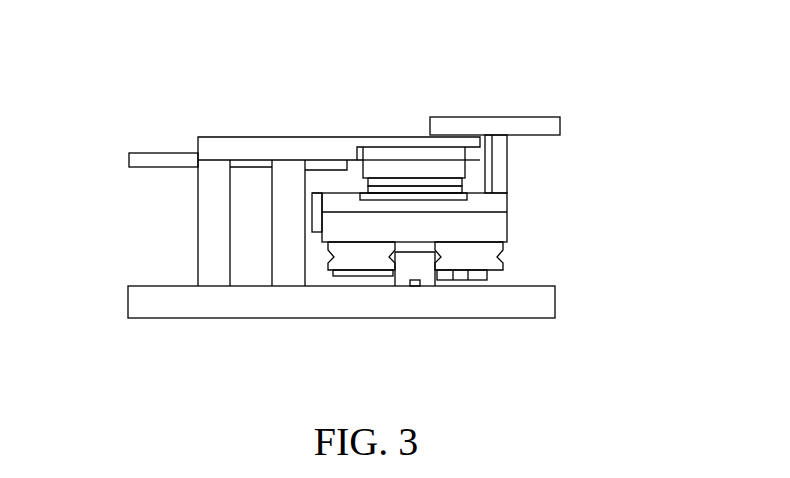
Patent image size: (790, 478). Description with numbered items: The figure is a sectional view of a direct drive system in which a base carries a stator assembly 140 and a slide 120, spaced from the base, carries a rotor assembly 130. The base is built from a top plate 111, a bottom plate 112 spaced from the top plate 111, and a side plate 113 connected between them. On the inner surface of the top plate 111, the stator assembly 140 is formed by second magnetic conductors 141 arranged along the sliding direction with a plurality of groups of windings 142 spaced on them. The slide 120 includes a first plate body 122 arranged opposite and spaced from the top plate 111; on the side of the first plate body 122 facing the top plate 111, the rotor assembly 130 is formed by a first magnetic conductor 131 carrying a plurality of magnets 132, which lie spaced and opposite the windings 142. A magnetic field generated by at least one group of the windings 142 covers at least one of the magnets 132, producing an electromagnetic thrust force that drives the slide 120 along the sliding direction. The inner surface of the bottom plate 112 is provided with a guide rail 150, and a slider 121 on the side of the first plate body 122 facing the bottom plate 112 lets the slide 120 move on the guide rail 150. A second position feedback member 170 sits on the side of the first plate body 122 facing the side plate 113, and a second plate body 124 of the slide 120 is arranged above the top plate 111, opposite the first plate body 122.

The top plate 111 is at (301, 175).
The bottom plate 112 is at (294, 325).
The side plate 113 is at (233, 116).
The slide 120 is at (498, 184).
The slider 121 is at (478, 253).
The first plate body 122 is at (467, 215).
The second plate body 124 is at (529, 141).
The rotor assembly 130 is at (498, 167).
The first magnetic conductor 131 is at (599, 140).
The magnets 132 is at (482, 160).
The stator assembly 140 is at (380, 105).
The second magnetic conductors 141 is at (416, 110).
The windings 142 is at (377, 59).
The guide rail 150 is at (460, 306).
The second position feedback member 170 is at (280, 277).